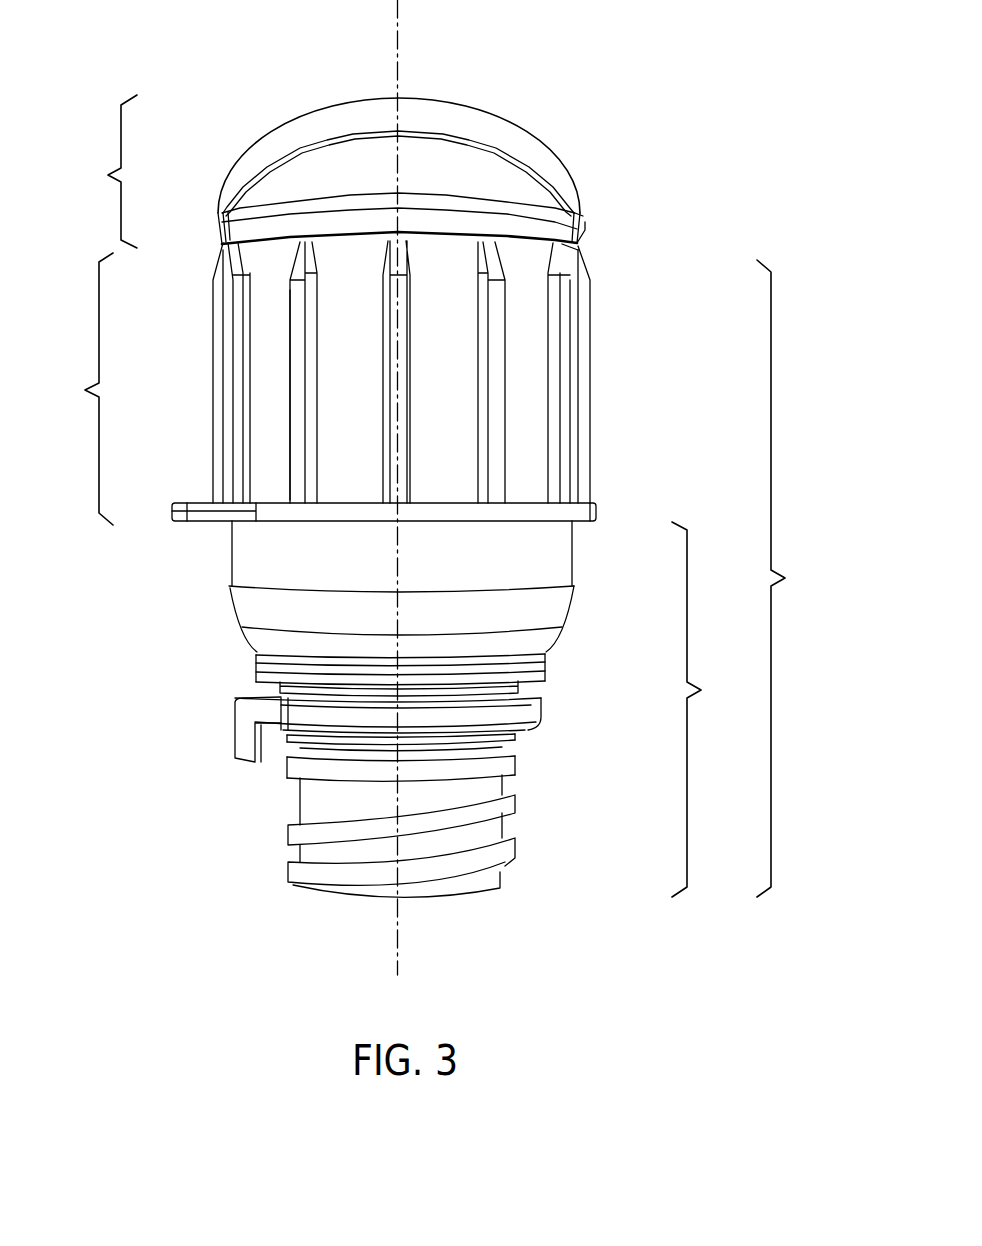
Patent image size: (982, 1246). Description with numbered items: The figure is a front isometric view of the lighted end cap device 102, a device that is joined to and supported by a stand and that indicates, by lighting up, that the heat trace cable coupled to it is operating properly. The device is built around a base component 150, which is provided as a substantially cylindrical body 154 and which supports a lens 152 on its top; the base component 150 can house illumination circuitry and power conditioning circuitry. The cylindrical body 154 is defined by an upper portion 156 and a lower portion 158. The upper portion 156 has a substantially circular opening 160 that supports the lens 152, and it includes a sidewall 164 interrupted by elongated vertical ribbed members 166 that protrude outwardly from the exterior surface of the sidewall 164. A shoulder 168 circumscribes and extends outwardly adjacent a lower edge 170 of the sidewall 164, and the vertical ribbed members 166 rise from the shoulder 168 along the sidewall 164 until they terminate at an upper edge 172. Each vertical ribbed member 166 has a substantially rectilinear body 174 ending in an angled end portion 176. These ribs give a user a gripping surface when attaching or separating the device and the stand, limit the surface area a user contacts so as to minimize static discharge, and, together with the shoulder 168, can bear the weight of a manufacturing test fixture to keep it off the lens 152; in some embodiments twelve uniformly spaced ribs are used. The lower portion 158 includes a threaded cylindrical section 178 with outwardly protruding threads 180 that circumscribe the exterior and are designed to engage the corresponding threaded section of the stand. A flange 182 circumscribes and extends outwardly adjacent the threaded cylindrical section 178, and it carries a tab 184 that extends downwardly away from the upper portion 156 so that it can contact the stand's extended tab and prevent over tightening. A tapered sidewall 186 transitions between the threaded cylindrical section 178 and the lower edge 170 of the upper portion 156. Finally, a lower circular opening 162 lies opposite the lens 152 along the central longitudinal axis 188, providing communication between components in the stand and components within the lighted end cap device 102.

The lighted end cap device 102 is at (572, 86).
The base component 150 is at (794, 578).
The lens 152 is at (102, 171).
The cylindrical body 154 is at (588, 545).
The upper portion 156 is at (79, 389).
The lower portion 158 is at (708, 709).
The circular opening 160 is at (222, 241).
The lower circular opening 162 is at (440, 898).
The sidewall 164 is at (350, 468).
The vertical ribbed members 166 is at (301, 407).
The shoulder 168 is at (180, 527).
The lower edge 170 is at (245, 562).
The upper edge 172 is at (572, 247).
The rectilinear body 174 is at (500, 432).
The angled end portion 176 is at (560, 265).
The threaded cylindrical section 178 is at (300, 828).
The threads 180 is at (293, 870).
The flange 182 is at (530, 731).
The tab 184 is at (246, 733).
The tapered sidewall 186 is at (576, 636).
The central longitudinal axis 188 is at (398, 35).